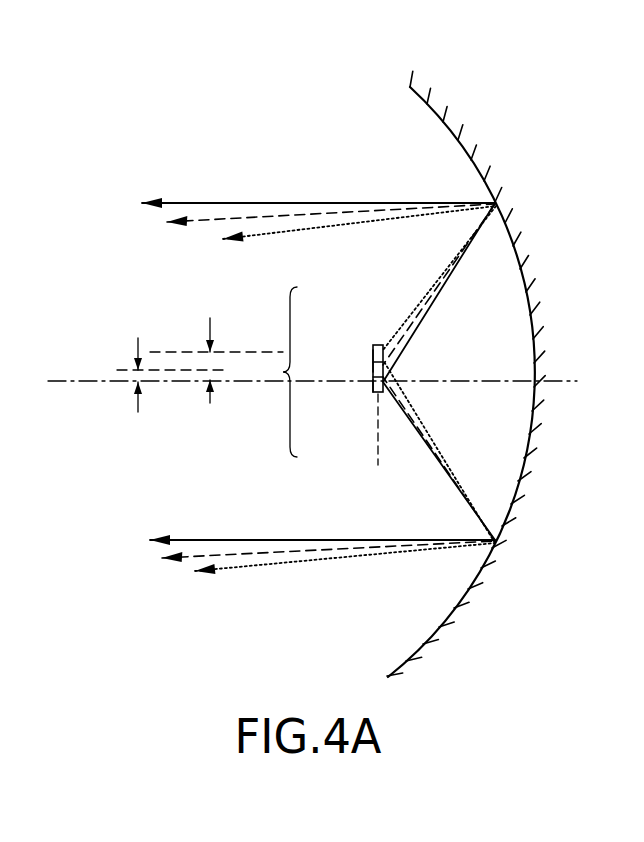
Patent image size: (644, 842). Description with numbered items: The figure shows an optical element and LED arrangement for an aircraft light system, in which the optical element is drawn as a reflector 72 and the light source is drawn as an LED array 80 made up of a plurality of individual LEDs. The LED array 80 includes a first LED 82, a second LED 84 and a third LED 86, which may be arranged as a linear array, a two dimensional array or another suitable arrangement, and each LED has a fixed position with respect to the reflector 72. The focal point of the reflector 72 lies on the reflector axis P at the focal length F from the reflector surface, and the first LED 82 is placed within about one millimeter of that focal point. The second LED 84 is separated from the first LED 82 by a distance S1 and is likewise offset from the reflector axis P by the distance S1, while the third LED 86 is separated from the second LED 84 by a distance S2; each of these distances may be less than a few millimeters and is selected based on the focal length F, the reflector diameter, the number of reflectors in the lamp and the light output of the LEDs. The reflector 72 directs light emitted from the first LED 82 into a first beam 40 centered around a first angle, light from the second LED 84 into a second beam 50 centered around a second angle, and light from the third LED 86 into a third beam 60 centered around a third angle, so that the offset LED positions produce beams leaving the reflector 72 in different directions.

The reflector 72 is at (422, 97).
The first beam 40 is at (170, 205).
The second beam 50 is at (215, 224).
The third beam 60 is at (270, 242).
The LED array 80 is at (283, 372).
The first LED 82 is at (378, 392).
The second LED 84 is at (373, 359).
The third LED 86 is at (380, 345).
The distance S1 is at (137, 360).
The distance S2 is at (203, 346).
The focal length F is at (378, 448).
The reflector axis P is at (565, 381).